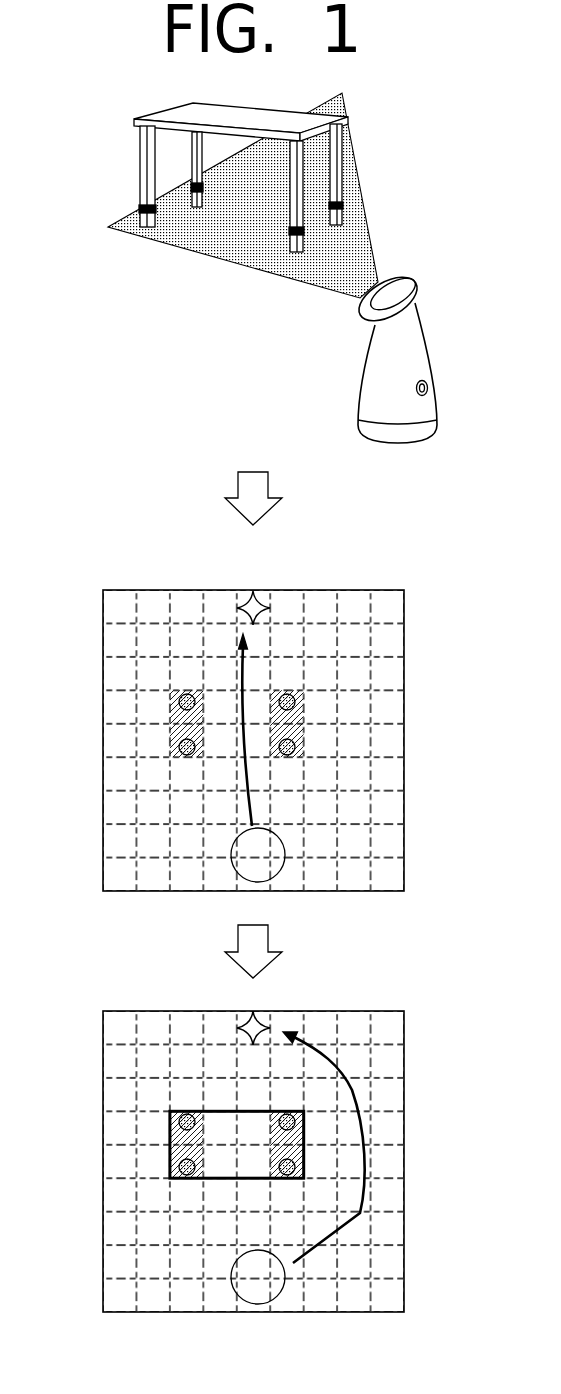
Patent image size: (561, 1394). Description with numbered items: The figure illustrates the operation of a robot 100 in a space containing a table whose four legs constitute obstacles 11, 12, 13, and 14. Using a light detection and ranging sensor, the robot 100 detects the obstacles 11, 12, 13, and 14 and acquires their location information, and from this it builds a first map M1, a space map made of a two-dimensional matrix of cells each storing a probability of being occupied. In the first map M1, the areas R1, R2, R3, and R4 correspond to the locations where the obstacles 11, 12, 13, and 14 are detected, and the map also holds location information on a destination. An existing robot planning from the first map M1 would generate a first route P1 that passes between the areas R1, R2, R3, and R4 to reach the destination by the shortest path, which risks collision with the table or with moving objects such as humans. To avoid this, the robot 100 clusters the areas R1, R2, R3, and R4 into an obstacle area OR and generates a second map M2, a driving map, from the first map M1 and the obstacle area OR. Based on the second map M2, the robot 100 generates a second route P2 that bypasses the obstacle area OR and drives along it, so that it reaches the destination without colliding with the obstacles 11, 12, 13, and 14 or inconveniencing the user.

The robot 100 is at (415, 341).
The obstacle 11 is at (145, 220).
The obstacle 12 is at (297, 253).
The obstacle 13 is at (197, 207).
The obstacle 14 is at (337, 227).
The element table is at (155, 115).
The first map M1 is at (122, 589).
The second map M2 is at (122, 1010).
The area R1 is at (175, 740).
The area R2 is at (300, 743).
The area R3 is at (175, 712).
The area R4 is at (300, 713).
The first route P1 is at (252, 808).
The second route P2 is at (303, 1250).
The obstacle area OR is at (220, 1110).
The element destination is at (254, 592).